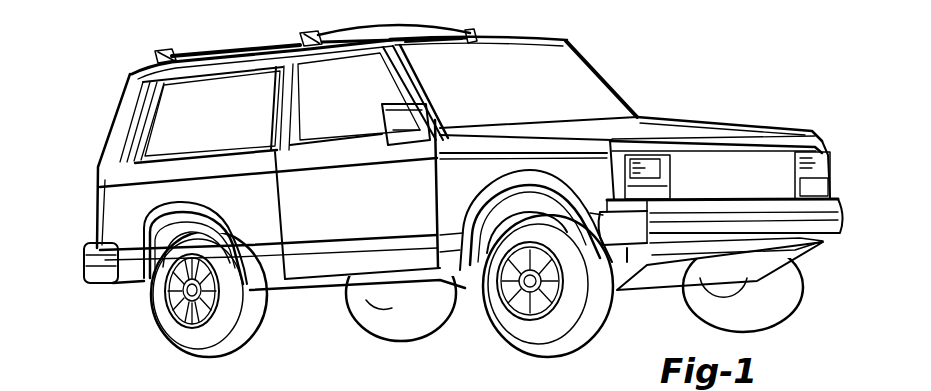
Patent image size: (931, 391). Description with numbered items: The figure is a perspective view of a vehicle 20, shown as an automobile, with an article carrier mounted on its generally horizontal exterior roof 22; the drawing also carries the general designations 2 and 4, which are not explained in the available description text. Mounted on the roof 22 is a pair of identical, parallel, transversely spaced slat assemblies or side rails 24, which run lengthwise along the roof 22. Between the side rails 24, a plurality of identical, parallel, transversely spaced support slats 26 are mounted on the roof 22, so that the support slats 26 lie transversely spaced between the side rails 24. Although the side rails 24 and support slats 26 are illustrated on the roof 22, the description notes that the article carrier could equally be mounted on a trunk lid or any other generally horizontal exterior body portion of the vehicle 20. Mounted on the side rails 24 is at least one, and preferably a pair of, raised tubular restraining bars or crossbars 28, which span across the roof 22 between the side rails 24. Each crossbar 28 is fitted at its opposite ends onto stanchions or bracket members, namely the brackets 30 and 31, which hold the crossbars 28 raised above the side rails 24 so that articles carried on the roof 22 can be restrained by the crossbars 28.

The roof rack assembly 2 is at (286, 33).
The vehicle 4 is at (463, 182).
The vehicle 20 is at (677, 120).
The roof 22 is at (497, 44).
The side rails 24 is at (347, 52).
The support slats 26 is at (443, 40).
The crossbars 28 is at (217, 48).
The bracket 30 is at (160, 50).
The bracket 31 is at (471, 31).